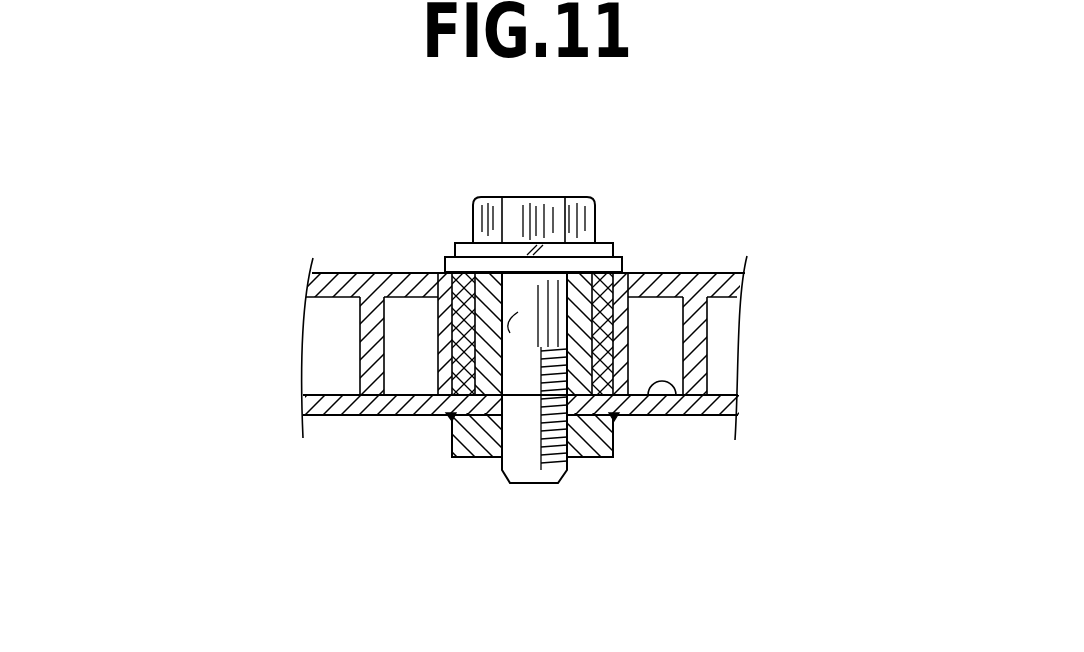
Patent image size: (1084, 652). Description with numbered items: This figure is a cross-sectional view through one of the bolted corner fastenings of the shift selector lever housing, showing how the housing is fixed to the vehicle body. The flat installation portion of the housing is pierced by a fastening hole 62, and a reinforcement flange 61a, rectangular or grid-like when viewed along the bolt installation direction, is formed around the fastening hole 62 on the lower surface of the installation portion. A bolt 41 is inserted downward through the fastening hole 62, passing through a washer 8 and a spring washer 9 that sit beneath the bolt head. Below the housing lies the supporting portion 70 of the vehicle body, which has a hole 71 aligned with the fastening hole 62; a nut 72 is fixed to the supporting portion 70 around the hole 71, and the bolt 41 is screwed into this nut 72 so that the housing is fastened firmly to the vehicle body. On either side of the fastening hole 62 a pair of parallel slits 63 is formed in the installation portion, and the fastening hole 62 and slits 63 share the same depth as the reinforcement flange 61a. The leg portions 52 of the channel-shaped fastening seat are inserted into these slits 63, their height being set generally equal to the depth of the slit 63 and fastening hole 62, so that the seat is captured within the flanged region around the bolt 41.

The bolt 41 is at (548, 197).
The spring washer 9 is at (608, 243).
The washer 8 is at (626, 260).
The slit 63 is at (470, 318).
The reinforcement flange 61a is at (360, 335).
The leg portion 52 is at (518, 312).
The fastening hole 62 is at (448, 414).
The hole 71 is at (468, 457).
The nut 72 is at (581, 458).
The supporting portion 70 is at (672, 396).